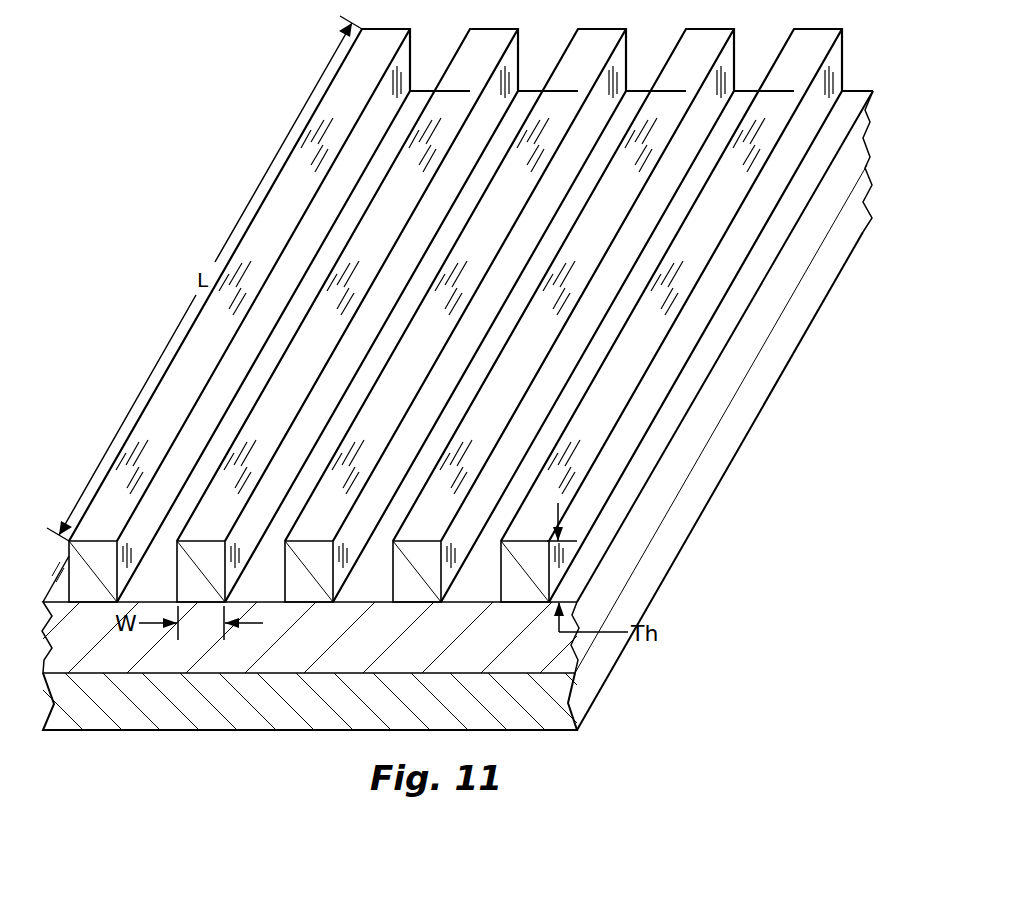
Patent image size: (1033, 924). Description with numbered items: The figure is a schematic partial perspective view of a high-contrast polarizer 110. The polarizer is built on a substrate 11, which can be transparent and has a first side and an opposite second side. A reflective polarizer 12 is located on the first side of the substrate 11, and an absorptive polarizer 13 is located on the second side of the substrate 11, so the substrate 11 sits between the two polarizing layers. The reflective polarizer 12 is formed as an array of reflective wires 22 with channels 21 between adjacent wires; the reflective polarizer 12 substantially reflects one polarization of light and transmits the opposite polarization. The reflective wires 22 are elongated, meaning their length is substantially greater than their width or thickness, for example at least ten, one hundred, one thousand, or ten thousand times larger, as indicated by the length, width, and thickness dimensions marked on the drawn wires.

The high-contrast polarizer 110 is at (98, 213).
The substrate 11 is at (318, 653).
The reflective polarizer 12 is at (856, 57).
The absorptive polarizer 13 is at (322, 716).
The channels 21 is at (446, 64).
The reflective wires 22 is at (106, 584).